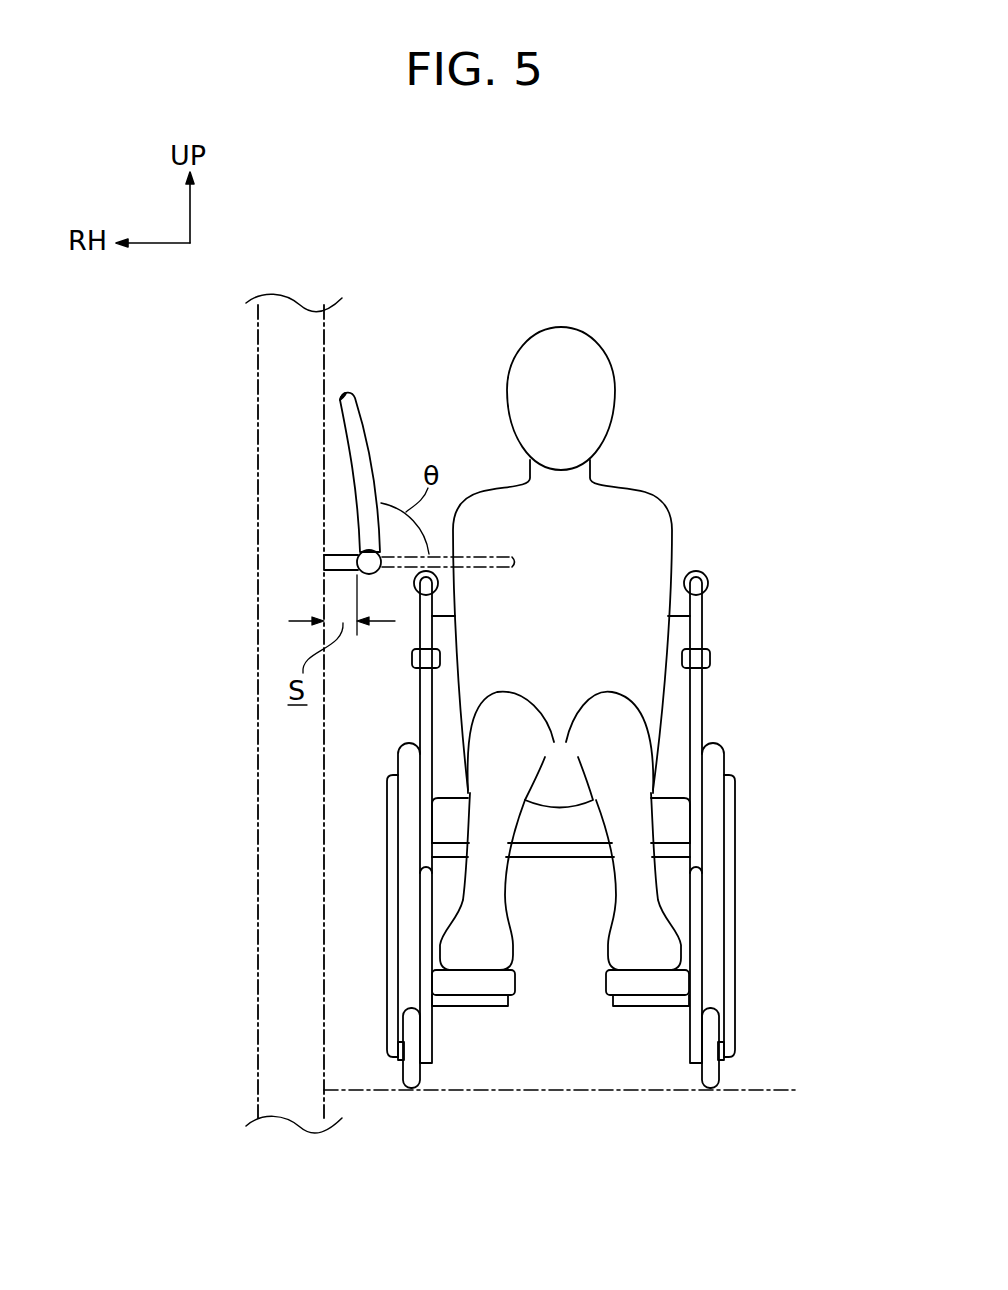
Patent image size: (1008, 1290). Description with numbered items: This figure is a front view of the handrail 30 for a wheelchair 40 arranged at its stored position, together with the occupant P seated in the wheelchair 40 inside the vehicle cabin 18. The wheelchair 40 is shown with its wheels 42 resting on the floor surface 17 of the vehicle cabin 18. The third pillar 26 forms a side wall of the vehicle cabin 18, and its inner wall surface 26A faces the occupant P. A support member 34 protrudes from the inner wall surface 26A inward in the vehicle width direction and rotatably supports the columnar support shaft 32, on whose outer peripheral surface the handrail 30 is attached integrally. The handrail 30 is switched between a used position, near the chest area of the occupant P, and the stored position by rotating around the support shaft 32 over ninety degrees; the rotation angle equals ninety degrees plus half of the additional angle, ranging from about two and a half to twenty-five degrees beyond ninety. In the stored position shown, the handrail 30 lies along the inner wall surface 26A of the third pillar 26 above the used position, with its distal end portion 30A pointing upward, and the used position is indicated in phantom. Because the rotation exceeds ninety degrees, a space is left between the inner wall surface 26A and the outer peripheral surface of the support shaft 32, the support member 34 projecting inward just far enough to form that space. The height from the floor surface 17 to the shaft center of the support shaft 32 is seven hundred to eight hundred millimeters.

The floor surface 17 is at (769, 1090).
The vehicle cabin 18 is at (697, 448).
The third pillar 26 is at (258, 387).
The inner wall surface 26A is at (325, 343).
The handrail 30 is at (365, 433).
The distal end portion 30A is at (344, 393).
The support shaft 32 is at (366, 558).
The support member 34 is at (338, 562).
The wheelchair 40 is at (702, 571).
The wheel 42 is at (405, 745).
The occupant P is at (573, 353).